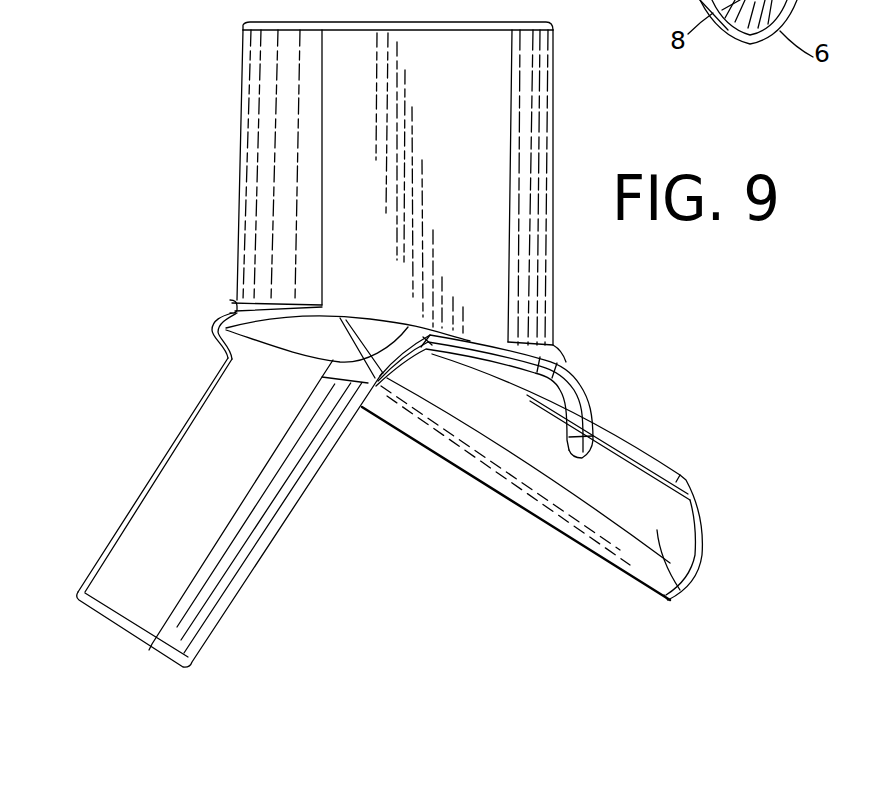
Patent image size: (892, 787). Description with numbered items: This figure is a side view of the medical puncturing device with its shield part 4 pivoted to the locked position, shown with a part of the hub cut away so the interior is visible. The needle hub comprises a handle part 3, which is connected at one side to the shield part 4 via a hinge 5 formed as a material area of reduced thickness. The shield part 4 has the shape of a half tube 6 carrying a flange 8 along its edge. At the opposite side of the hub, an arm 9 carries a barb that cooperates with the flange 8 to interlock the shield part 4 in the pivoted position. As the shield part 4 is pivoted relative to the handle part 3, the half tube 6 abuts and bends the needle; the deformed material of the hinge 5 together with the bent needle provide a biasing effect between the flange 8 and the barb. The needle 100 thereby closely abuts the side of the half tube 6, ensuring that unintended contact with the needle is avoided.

The handle part 3 is at (553, 163).
The shield part 4 is at (182, 506).
The hinge 5 is at (212, 324).
The half tube 6 is at (681, 592).
The flange 8 is at (690, 492).
The arm 9 is at (587, 392).
The needle 100 is at (473, 463).